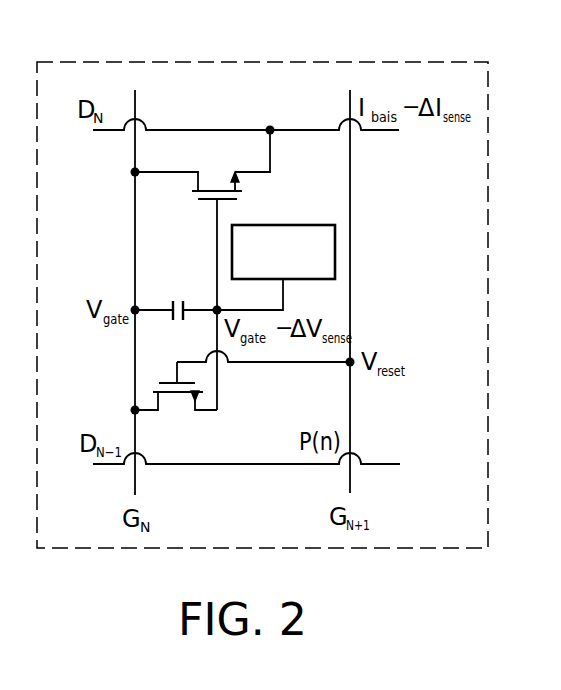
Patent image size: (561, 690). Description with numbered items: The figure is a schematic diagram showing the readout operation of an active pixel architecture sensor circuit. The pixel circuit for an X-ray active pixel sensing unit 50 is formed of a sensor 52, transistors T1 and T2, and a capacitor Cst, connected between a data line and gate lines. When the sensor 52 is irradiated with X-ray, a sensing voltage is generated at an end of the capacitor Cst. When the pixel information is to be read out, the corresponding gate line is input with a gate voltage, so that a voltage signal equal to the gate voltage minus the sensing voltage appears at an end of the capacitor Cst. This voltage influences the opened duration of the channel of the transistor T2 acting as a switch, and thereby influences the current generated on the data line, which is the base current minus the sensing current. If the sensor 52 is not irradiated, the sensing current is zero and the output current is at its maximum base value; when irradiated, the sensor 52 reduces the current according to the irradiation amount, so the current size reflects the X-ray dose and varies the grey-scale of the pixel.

The X-ray active pixel sensing unit 50 is at (290, 61).
The sensor 52 is at (290, 224).
The transistor T1 is at (176, 400).
The transistor T2 is at (202, 180).
The capacitor Cst is at (176, 296).